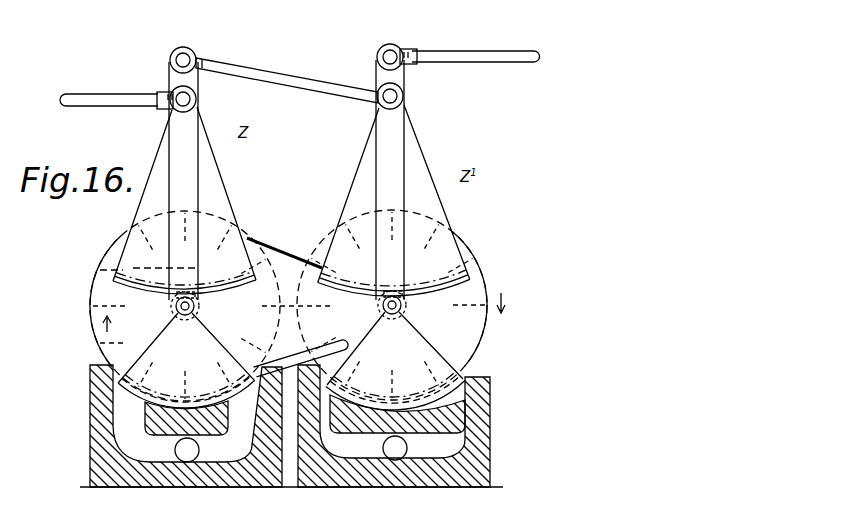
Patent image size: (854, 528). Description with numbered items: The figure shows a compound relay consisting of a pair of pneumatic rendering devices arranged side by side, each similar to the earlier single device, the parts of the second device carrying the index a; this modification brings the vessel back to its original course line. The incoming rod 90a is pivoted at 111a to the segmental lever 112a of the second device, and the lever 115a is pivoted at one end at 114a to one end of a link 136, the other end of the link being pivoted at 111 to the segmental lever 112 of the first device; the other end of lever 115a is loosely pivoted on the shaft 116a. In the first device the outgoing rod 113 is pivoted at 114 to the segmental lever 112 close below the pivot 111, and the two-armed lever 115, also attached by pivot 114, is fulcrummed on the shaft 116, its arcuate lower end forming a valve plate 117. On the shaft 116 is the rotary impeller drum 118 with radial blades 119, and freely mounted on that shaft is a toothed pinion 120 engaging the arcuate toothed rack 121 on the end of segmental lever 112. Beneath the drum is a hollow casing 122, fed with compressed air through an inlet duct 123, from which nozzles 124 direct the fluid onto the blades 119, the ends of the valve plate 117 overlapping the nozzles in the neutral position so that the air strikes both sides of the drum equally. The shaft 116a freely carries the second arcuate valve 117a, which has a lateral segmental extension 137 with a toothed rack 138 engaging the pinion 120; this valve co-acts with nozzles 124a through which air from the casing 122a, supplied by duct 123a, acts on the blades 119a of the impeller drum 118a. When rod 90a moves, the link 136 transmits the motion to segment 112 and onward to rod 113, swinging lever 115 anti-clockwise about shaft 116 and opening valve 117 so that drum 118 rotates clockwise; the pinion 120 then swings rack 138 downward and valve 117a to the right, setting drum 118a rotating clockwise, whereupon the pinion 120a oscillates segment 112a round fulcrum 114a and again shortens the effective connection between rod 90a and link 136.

The pivot 111 is at (193, 51).
The outgoing rod 113 is at (100, 101).
The pivot 114 is at (197, 99).
The two-armed lever 115 is at (190, 163).
The segmental lever 112 is at (232, 192).
The link 136 is at (323, 87).
The pivot 111a is at (398, 45).
The incoming rod 90a is at (497, 42).
The pivot 114a is at (405, 93).
The segmental lever 112a is at (417, 137).
The lever 115a is at (383, 157).
The lateral segmental extension 137 is at (283, 257).
The rotary impeller drum 118 is at (100, 263).
The toothed rack 138 is at (176, 275).
The arcuate toothed rack 121 is at (93, 296).
The toothed pinion 120 is at (175, 310).
The radial vanes or blades 119 is at (262, 306).
The shaft 116 is at (186, 318).
The arcuate valve plate 117 is at (122, 381).
The nozzle 124 is at (125, 418).
The hollow casing 122 is at (128, 472).
The inlet duct 123 is at (188, 453).
The impeller drum 118a is at (478, 280).
The blades 119a is at (485, 328).
The pinion 120a is at (383, 308).
The shaft 116a is at (395, 343).
The second arcuate valve 117a is at (465, 380).
The nozzle 124a is at (464, 403).
The casing 122a is at (480, 450).
The inlet duct 123a is at (397, 452).